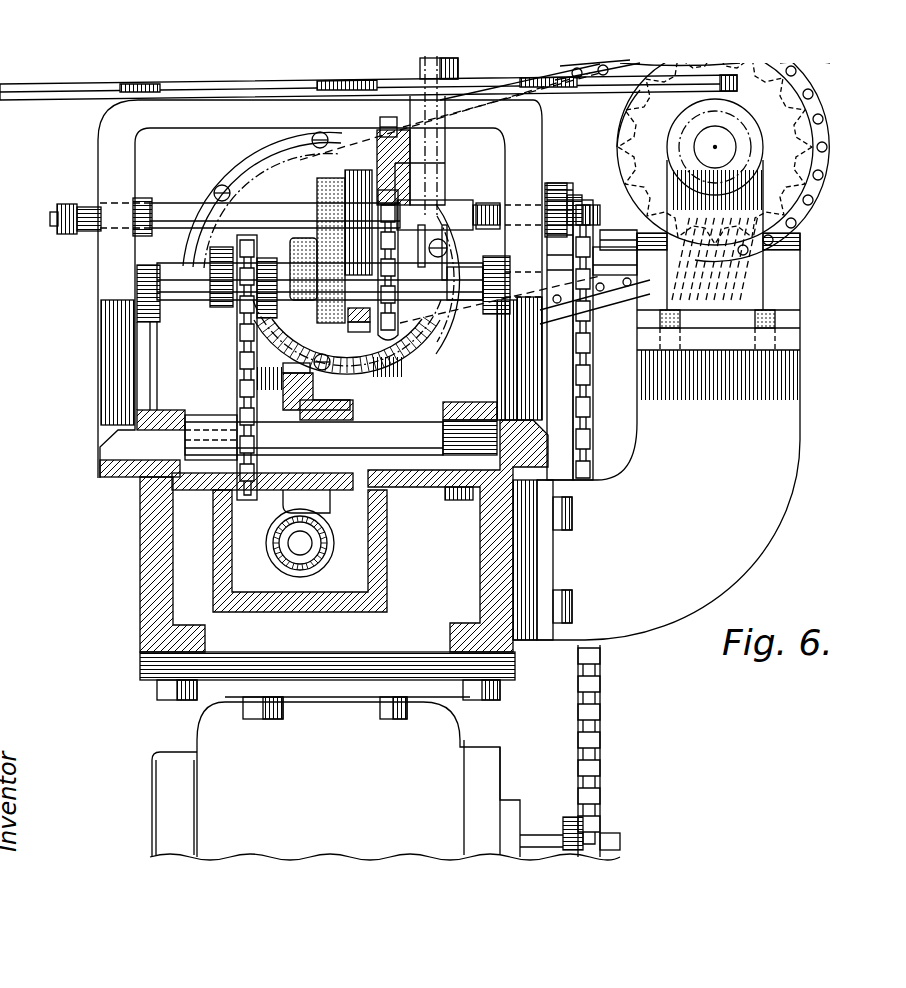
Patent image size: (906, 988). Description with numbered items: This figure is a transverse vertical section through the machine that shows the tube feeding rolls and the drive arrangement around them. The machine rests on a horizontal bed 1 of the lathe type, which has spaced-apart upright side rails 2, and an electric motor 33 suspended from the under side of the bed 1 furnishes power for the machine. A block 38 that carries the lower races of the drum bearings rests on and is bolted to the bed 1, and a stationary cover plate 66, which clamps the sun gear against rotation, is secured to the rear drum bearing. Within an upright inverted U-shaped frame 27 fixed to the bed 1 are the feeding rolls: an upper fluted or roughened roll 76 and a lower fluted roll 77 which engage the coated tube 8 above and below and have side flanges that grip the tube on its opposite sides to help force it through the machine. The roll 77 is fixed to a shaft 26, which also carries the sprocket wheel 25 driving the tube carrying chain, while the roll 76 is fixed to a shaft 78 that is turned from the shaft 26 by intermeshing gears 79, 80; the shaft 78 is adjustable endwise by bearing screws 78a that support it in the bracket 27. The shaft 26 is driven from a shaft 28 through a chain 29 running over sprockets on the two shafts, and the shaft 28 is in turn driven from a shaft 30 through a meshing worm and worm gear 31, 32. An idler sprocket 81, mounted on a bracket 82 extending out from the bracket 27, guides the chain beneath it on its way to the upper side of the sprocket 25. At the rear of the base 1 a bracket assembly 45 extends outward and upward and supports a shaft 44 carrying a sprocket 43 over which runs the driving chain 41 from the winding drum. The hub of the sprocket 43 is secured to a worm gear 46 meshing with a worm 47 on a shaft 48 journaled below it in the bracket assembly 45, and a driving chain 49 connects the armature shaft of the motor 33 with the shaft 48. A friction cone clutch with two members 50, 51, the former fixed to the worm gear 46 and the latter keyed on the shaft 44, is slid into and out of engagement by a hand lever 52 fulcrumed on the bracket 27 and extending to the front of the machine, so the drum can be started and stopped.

The horizontal bed 1 is at (130, 642).
The upright side rails 2 is at (148, 580).
The coated tube 8 is at (300, 241).
The sprocket wheel 25 is at (388, 343).
The shaft 26 is at (455, 320).
The inverted U-shaped frame 27 is at (98, 153).
The shaft 28 is at (386, 428).
The chain 29 is at (240, 394).
The shaft 30 is at (286, 553).
The worm 31 is at (316, 500).
The worm gear 32 is at (328, 545).
The electric motor 33 is at (385, 778).
The block 38 is at (145, 367).
The driving chain 41 is at (535, 95).
The sprocket 43 is at (603, 152).
The shaft 44 is at (714, 148).
The bracket assembly 45 is at (745, 200).
The worm gear 46 is at (826, 176).
The worm 47 is at (717, 321).
The shaft 48 is at (612, 258).
The driving chain 49 is at (593, 430).
The clutch member 50 is at (812, 95).
The clutch member 51 is at (785, 140).
The hand lever 52 is at (23, 98).
The stationary cover plate 66 is at (268, 188).
The upper fluted roll 76 is at (318, 184).
The lower fluted roll 77 is at (313, 340).
The shaft 78 is at (180, 208).
The bearing screws 78a is at (50, 223).
The gear 79 is at (355, 175).
The gear 80 is at (357, 370).
The idler sprocket 81 is at (388, 115).
The bracket 82 is at (430, 150).